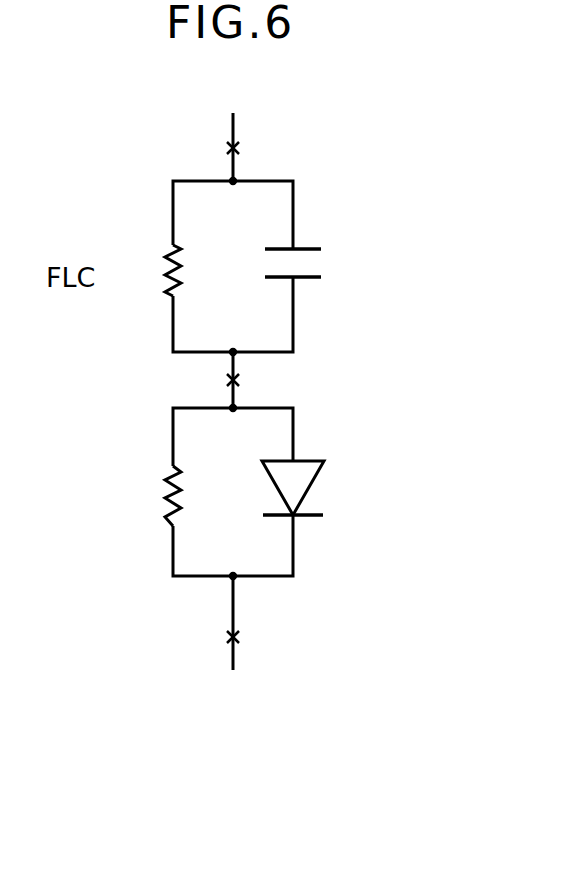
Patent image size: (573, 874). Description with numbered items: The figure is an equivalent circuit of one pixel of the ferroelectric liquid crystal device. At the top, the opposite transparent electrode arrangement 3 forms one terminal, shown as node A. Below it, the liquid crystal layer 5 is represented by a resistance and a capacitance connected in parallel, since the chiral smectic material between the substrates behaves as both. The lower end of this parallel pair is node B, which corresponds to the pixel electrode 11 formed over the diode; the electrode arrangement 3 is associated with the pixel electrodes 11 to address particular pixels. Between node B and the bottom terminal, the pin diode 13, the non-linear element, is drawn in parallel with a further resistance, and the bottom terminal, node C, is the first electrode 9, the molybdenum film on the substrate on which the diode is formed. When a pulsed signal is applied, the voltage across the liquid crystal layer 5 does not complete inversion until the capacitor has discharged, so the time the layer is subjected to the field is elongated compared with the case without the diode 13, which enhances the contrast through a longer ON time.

The opposite transparent electrode arrangement 3 is at (236, 118).
The liquid crystal layer 5 is at (350, 228).
The first electrode 9 is at (236, 598).
The pixel electrode 11 is at (230, 384).
The pin diode 13 is at (338, 448).